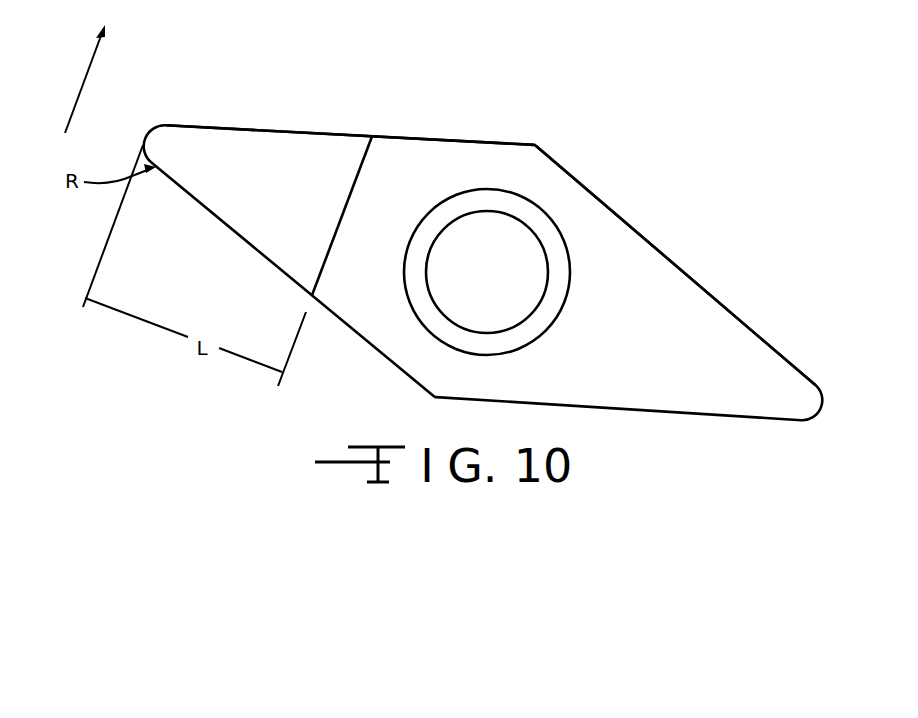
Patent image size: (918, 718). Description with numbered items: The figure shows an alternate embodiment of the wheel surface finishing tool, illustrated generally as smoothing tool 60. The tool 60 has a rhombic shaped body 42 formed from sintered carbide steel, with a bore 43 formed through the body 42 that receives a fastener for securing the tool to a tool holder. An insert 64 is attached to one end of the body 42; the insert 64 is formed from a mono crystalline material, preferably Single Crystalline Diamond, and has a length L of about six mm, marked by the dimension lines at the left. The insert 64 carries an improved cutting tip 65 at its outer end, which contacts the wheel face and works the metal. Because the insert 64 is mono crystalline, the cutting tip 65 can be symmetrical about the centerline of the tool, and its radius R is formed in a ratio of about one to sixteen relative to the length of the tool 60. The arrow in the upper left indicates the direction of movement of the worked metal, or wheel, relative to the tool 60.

The smoothing tool 60 is at (630, 133).
The cutting tip 65 is at (208, 128).
The insert 64 is at (321, 134).
The rhombic shaped body 42 is at (698, 309).
The bore 43 is at (501, 276).